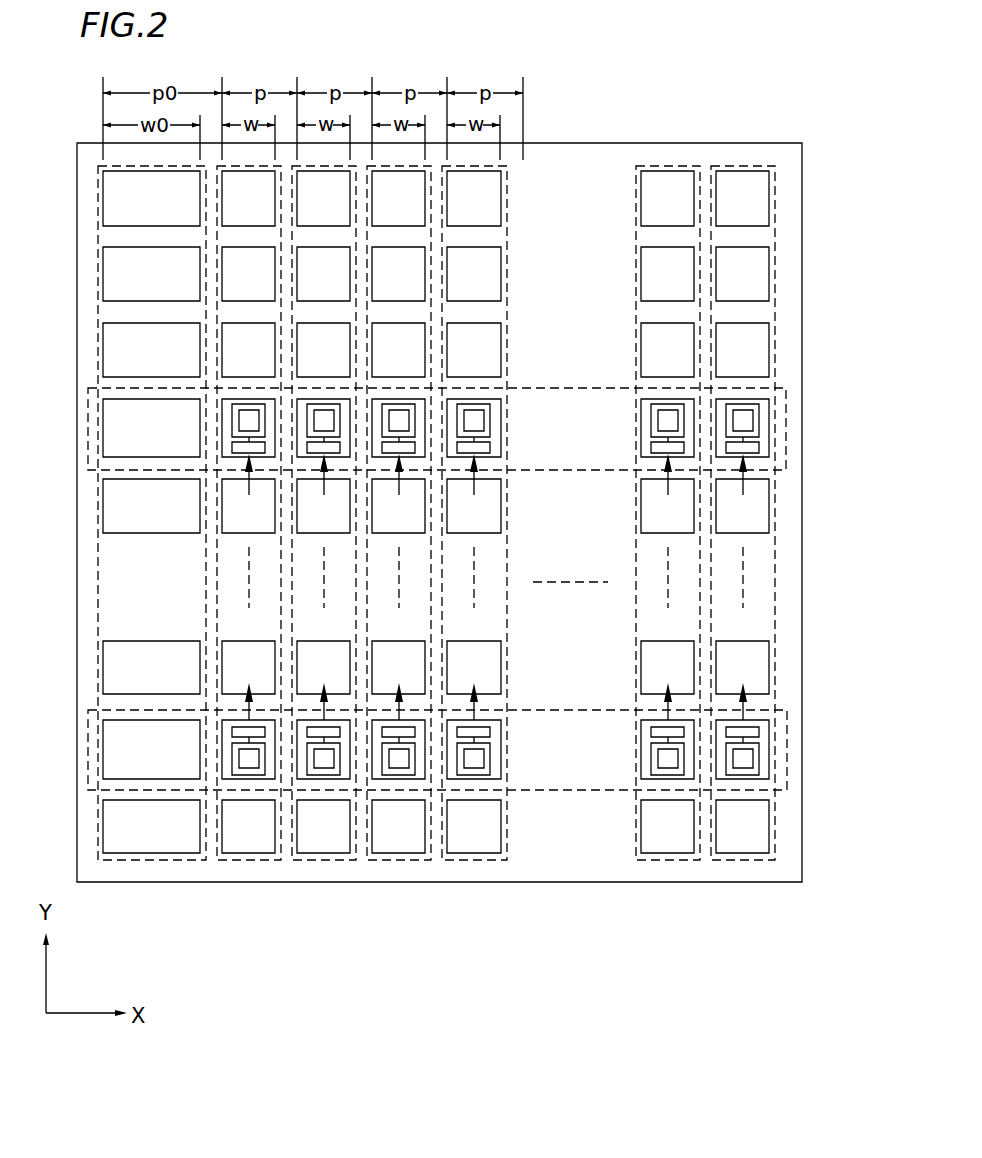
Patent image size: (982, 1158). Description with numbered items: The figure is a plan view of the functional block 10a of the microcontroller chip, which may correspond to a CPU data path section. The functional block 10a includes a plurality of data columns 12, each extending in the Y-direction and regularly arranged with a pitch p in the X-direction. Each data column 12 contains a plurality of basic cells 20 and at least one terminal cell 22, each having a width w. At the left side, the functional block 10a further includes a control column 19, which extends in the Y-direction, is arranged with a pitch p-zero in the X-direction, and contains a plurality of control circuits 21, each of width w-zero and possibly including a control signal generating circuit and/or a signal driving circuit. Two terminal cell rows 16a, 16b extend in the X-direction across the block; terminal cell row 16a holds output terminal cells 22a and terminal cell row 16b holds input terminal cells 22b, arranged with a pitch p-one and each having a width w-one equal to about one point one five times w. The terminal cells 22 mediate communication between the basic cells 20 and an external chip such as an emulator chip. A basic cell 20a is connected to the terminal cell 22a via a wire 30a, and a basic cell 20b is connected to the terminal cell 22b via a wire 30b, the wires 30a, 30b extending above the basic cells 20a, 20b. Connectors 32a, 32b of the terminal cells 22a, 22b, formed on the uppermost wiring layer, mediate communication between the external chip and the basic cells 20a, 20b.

The functional block 10a is at (803, 237).
The data column 12 is at (507, 192).
The terminal cell row 16a is at (608, 387).
The terminal cell row 16b is at (580, 792).
The control column 19 is at (97, 213).
The basic cell 20 is at (500, 265).
The basic cell 20a is at (503, 514).
The basic cell 20b is at (503, 685).
The control circuit 21 is at (103, 278).
The terminal cell 22 is at (770, 437).
The output terminal cell 22a is at (517, 390).
The input terminal cell 22b is at (447, 831).
The wire 30a is at (476, 487).
The wire 30b is at (478, 717).
The connector 32a is at (485, 418).
The connector 32b is at (467, 760).